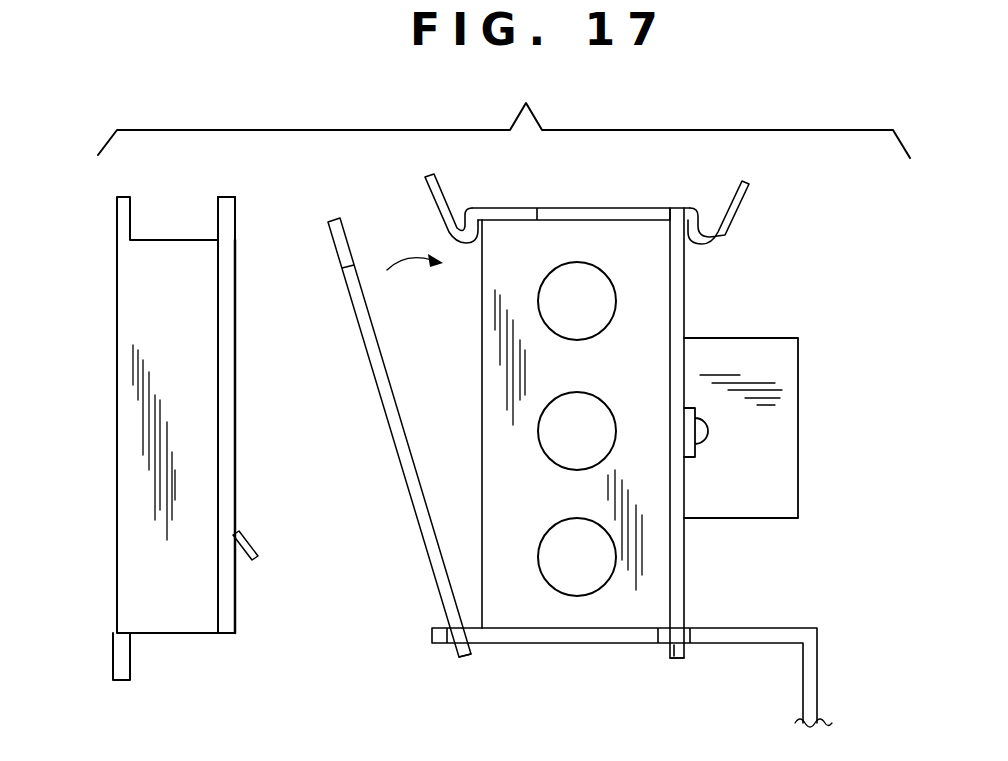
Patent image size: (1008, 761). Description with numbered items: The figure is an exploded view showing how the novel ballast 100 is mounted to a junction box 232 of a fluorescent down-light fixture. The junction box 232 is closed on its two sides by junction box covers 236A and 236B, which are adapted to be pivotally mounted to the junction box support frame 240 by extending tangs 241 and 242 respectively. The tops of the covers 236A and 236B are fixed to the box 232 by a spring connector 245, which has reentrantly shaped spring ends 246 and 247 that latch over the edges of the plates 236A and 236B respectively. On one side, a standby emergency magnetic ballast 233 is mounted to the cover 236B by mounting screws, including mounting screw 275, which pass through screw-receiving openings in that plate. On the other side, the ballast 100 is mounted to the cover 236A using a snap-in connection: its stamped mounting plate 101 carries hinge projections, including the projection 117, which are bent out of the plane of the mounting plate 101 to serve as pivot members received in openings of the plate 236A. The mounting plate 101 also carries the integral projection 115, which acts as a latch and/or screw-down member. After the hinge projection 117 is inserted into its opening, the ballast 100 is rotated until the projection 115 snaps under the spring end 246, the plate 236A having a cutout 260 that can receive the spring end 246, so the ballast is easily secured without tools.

The ballast 100 is at (112, 558).
The integral projection 115 is at (224, 205).
The mounting plate 101 is at (235, 314).
The hinge projection 117 is at (250, 545).
The junction box cover 236A is at (372, 377).
The tang 241 is at (470, 658).
The spring end 246 is at (452, 230).
The spring connector 245 is at (628, 207).
The spring end 247 is at (736, 216).
The junction box 232 is at (660, 270).
The junction box cover 236B is at (688, 305).
The tang 242 is at (673, 658).
The standby emergency magnetic ballast 233 is at (773, 480).
The mounting screw 275 is at (708, 430).
The junction box support frame 240 is at (737, 628).
The cutout 260 is at (603, 749).